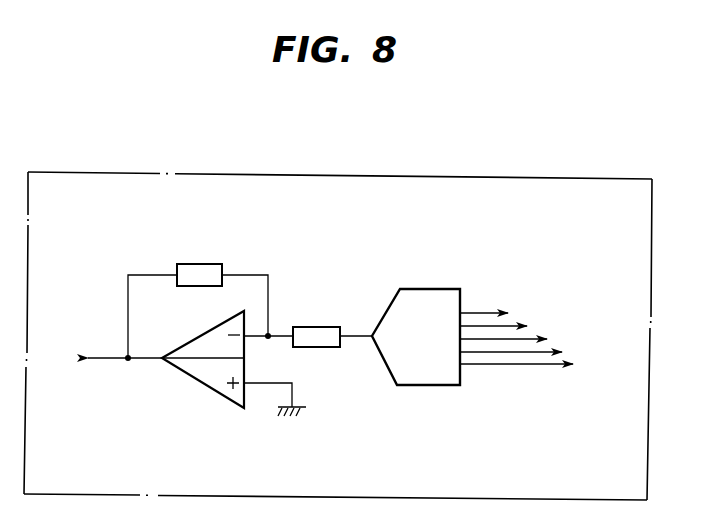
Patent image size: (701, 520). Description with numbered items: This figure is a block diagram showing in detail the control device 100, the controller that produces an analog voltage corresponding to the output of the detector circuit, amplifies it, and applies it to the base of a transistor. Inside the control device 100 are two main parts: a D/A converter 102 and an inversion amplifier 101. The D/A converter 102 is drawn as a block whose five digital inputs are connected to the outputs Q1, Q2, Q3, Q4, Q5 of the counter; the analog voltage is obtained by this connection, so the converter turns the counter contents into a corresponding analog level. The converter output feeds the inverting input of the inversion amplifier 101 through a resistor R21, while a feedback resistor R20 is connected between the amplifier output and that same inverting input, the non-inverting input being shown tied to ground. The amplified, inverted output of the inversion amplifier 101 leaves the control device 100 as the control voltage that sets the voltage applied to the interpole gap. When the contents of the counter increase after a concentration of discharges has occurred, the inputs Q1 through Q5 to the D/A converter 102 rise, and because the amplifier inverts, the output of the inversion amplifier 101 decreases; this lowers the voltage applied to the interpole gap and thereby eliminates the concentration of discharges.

The control device 100 is at (565, 178).
The inversion amplifier 101 is at (187, 376).
The D/A converter 102 is at (420, 387).
The feedback resistor R20 is at (199, 259).
The input resistor R21 is at (316, 321).
The counter output Q1 is at (508, 312).
The counter output Q2 is at (528, 325).
The counter output Q3 is at (548, 338).
The counter output Q4 is at (563, 351).
The counter output Q5 is at (575, 365).